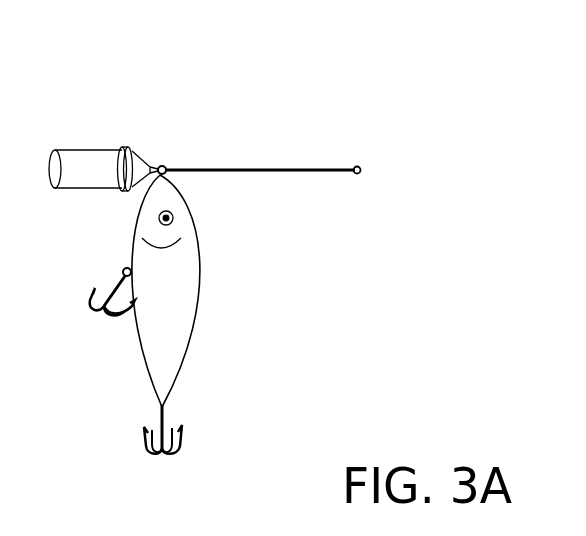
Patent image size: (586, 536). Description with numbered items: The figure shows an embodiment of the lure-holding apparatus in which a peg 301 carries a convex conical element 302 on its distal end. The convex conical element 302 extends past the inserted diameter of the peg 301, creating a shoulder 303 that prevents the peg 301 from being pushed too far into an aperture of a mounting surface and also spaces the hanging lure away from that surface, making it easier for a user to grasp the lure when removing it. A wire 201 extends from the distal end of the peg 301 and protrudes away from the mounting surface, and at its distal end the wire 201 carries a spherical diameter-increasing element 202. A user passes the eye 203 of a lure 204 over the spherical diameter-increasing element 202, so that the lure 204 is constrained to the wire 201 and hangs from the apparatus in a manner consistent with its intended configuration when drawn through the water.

The wire 201 is at (283, 170).
The spherical diameter-increasing element 202 is at (361, 167).
The eye 203 is at (167, 172).
The lure 204 is at (218, 272).
The peg 301 is at (80, 158).
The convex conical element 302 is at (138, 158).
The shoulder 303 is at (119, 147).